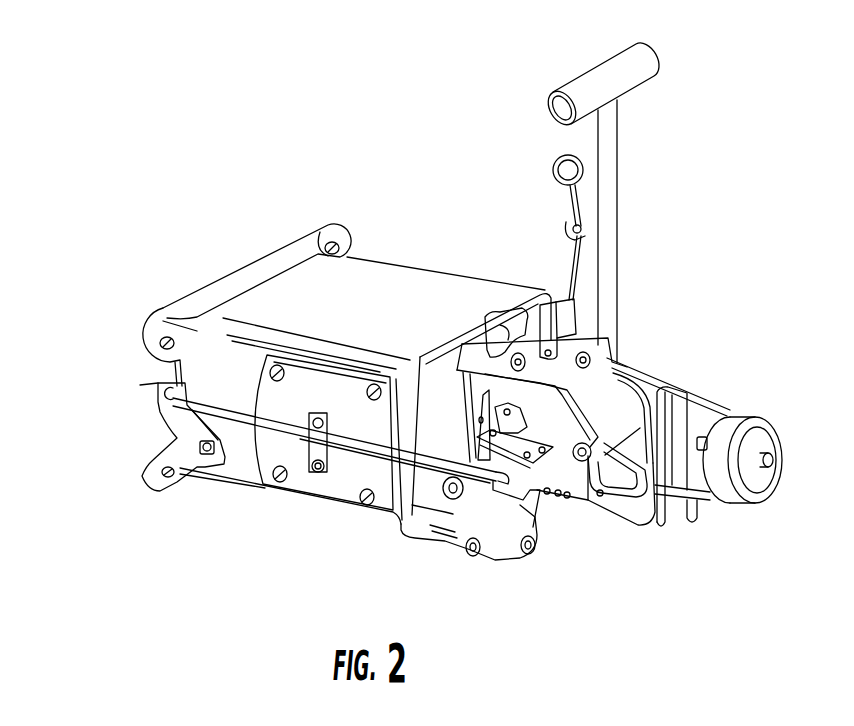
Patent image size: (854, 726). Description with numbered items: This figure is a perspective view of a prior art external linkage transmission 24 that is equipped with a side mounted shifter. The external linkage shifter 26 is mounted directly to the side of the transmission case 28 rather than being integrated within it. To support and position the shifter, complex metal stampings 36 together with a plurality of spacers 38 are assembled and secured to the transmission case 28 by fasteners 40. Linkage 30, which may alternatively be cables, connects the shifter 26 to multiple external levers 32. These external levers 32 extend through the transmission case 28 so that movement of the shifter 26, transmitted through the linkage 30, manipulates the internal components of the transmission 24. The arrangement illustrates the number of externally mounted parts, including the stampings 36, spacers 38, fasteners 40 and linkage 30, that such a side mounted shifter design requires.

The external linkage transmission 24 is at (412, 283).
The external linkage shifter 26 is at (606, 274).
The transmission case 28 is at (442, 298).
The linkage 30 is at (396, 496).
The external levers 32 is at (157, 385).
The complex metal stampings 36 is at (613, 393).
The spacers 38 is at (534, 300).
The fasteners 40 is at (573, 497).